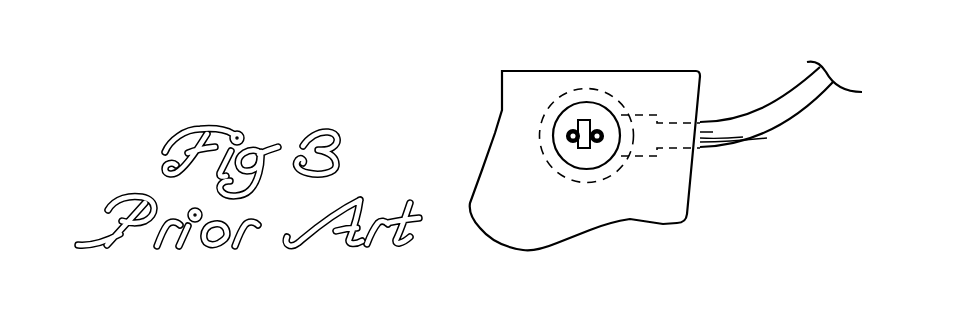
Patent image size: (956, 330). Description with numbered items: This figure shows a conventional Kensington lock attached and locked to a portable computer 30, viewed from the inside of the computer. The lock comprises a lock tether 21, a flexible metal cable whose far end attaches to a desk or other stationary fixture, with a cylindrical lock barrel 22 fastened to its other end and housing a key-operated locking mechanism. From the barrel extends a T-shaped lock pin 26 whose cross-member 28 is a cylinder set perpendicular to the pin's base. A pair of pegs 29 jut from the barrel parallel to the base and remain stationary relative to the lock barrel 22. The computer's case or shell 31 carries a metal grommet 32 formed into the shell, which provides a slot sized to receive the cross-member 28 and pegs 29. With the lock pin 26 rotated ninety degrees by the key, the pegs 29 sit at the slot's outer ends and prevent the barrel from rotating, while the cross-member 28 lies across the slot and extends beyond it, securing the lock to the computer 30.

The lock tether 21 is at (792, 118).
The lock barrel 22 is at (590, 183).
The T-shaped lock pin 26 is at (586, 110).
The cross-member 28 is at (578, 120).
The pegs 29 is at (588, 144).
The portable computer 30 is at (715, 70).
The case or shell 31 is at (488, 174).
The metal grommet 32 is at (573, 108).